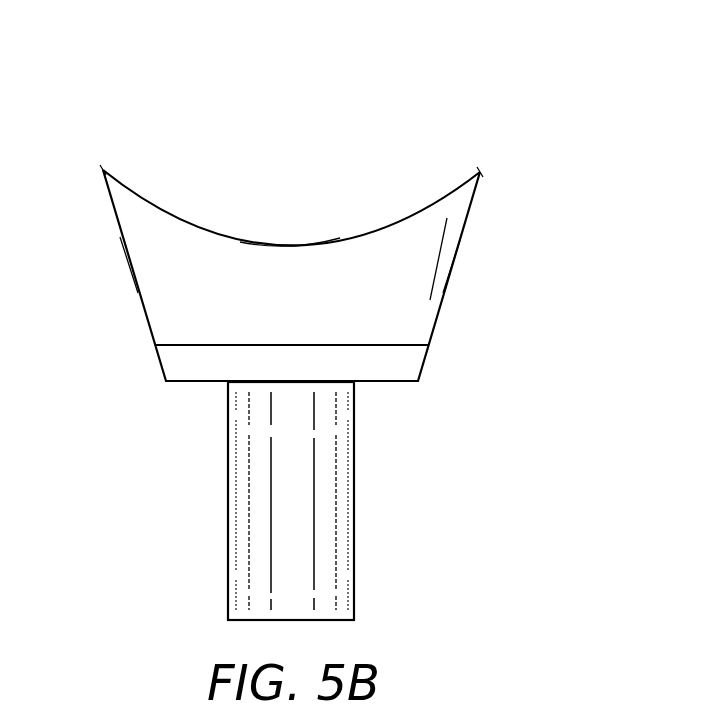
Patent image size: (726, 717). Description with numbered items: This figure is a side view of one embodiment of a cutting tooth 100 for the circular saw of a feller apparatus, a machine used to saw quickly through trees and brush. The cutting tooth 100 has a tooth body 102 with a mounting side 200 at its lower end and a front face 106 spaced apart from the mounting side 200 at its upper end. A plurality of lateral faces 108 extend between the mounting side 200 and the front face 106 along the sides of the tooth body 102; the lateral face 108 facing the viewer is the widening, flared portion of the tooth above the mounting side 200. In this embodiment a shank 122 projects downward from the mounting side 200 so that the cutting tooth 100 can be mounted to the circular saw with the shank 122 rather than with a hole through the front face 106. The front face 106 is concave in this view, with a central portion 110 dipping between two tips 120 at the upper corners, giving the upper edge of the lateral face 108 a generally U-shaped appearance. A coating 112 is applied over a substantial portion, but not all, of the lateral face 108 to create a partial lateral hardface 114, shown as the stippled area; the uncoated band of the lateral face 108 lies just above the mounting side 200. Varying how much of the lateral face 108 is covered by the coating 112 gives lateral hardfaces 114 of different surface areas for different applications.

The cutting tooth 100 is at (552, 154).
The tooth body 102 is at (120, 237).
The front face 106 is at (150, 207).
The lateral face 108 is at (138, 293).
The central portion 110 is at (290, 245).
The coating 112 is at (417, 323).
The lateral hardface 114 is at (447, 218).
The tips 120 is at (103, 170).
The shank 122 is at (355, 482).
The mounting side 200 is at (193, 383).